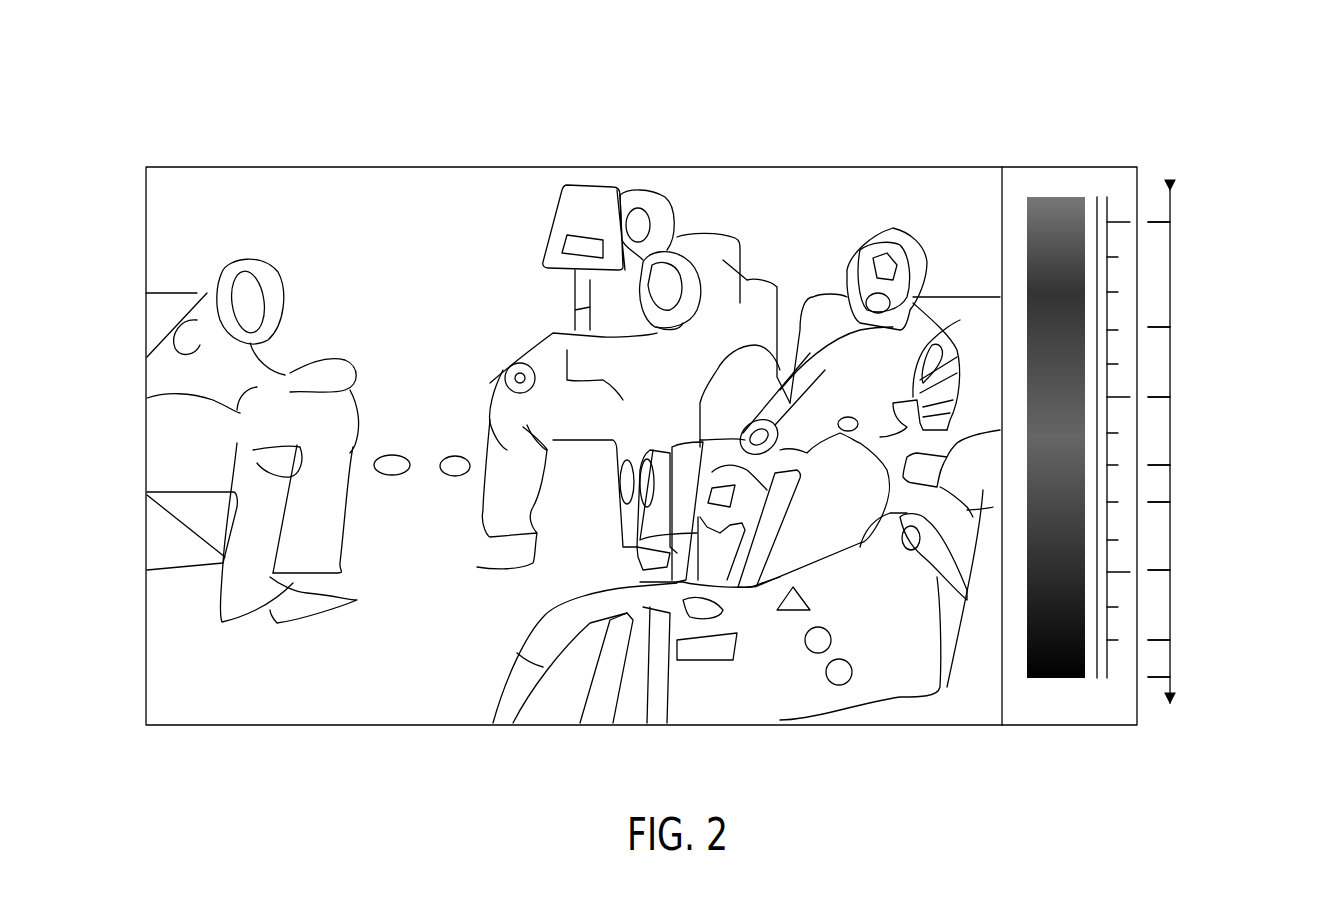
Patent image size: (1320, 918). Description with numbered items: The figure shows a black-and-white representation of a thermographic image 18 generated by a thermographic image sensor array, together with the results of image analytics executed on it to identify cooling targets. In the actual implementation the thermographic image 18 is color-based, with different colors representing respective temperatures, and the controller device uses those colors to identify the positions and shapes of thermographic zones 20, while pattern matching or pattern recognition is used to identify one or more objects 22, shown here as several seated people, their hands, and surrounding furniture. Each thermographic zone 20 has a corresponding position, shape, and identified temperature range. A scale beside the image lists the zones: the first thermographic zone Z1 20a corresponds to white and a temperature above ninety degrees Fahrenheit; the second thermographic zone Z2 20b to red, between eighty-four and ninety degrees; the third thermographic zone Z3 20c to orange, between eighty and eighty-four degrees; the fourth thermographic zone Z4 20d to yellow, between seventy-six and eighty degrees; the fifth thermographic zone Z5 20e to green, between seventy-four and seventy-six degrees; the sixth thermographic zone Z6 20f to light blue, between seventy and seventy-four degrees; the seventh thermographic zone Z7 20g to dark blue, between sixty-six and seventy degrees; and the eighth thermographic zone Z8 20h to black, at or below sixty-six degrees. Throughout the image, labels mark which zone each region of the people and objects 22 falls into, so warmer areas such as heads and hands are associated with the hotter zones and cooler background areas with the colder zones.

The thermographic image 18 is at (398, 116).
The thermographic zones 20 is at (1153, 740).
The objects 22 is at (300, 291).
The first thermographic zone Z1 is at (250, 287).
The second thermographic zone Z2 is at (268, 388).
The third thermographic zone Z3 is at (257, 360).
The fourth thermographic zone Z4 is at (570, 245).
The fifth thermographic zone Z5 is at (578, 325).
The sixth thermographic zone Z6 is at (322, 518).
The seventh thermographic zone Z7 is at (155, 660).
The eighth thermographic zone Z8 is at (447, 458).
The first thermographic zone 20a is at (1160, 211).
The second thermographic zone 20b is at (1160, 276).
The third thermographic zone 20c is at (1160, 373).
The fourth thermographic zone 20d is at (1160, 436).
The fifth thermographic zone 20e is at (1160, 486).
The sixth thermographic zone 20f is at (1160, 541).
The seventh thermographic zone 20g is at (1160, 614).
The eighth thermographic zone 20h is at (1160, 666).